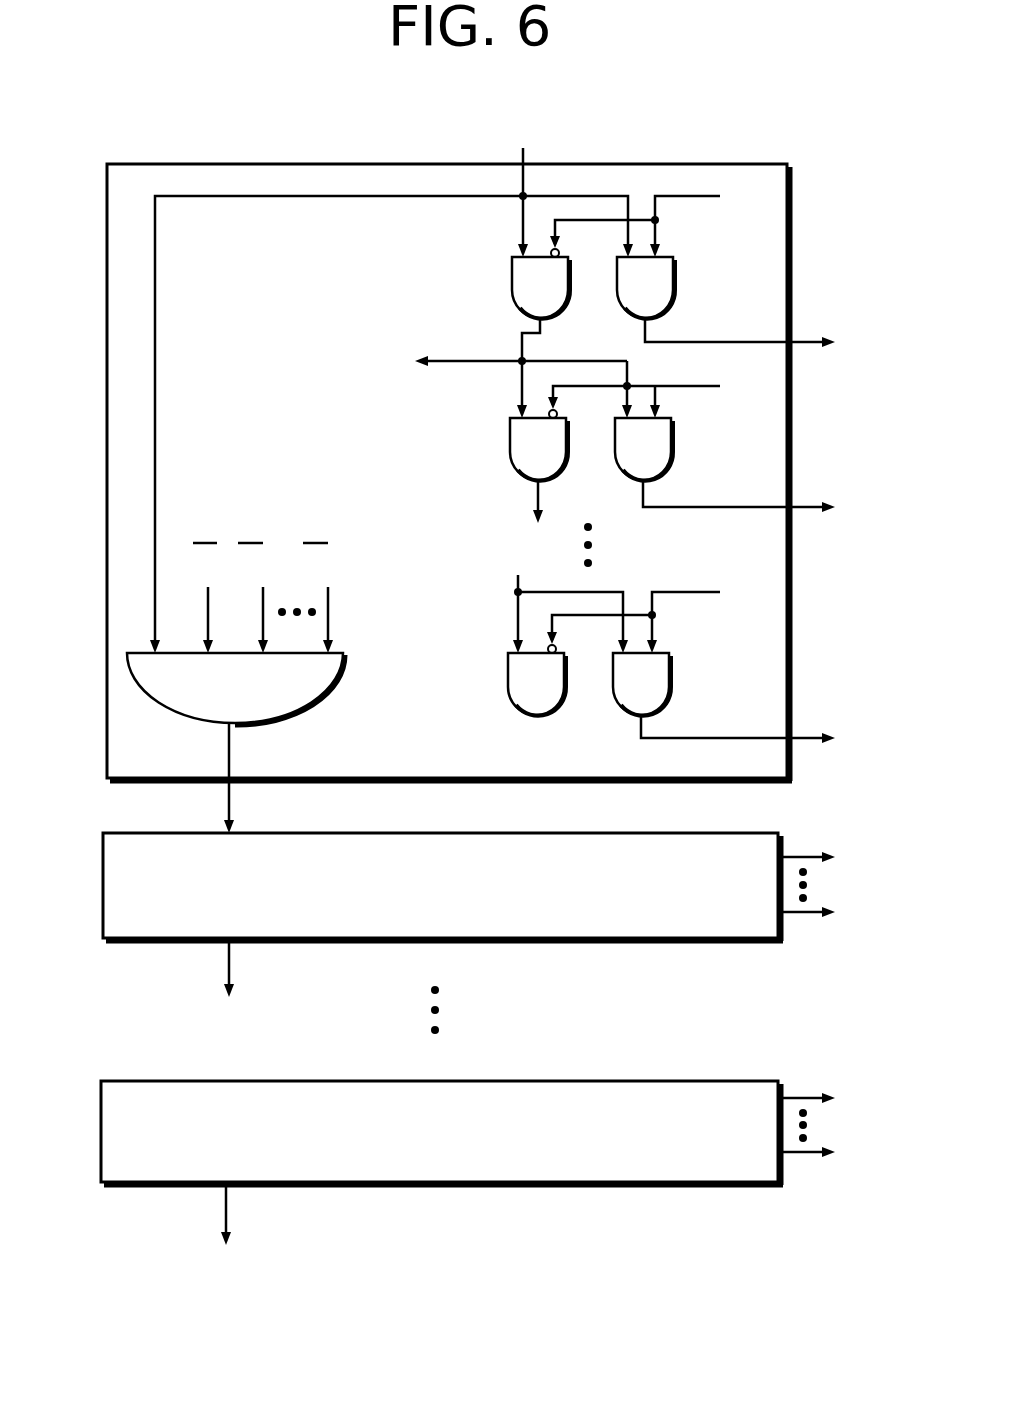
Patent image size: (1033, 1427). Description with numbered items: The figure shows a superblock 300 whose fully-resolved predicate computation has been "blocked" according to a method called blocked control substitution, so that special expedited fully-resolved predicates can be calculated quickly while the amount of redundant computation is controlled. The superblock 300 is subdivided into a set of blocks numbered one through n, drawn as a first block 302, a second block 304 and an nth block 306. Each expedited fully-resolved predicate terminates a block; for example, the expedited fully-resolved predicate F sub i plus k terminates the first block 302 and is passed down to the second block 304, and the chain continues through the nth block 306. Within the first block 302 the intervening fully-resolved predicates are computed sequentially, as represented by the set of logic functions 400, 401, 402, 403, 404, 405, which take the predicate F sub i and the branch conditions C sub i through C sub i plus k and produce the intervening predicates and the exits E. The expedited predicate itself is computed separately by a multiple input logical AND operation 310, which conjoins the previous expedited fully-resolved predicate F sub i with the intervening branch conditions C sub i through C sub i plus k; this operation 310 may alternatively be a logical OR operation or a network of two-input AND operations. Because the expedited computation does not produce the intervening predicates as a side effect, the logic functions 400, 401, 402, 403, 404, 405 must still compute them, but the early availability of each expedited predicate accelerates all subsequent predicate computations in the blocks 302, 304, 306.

The superblock 300 is at (72, 370).
The block 1 302 is at (462, 766).
The block 2 304 is at (461, 912).
The block n 306 is at (461, 1160).
The multiple input logical AND operation 310 is at (250, 701).
The logic function 400 is at (559, 296).
The logic function 401 is at (664, 296).
The logic function 402 is at (557, 457).
The logic function 403 is at (662, 457).
The logic function 404 is at (555, 692).
The logic function 405 is at (660, 692).